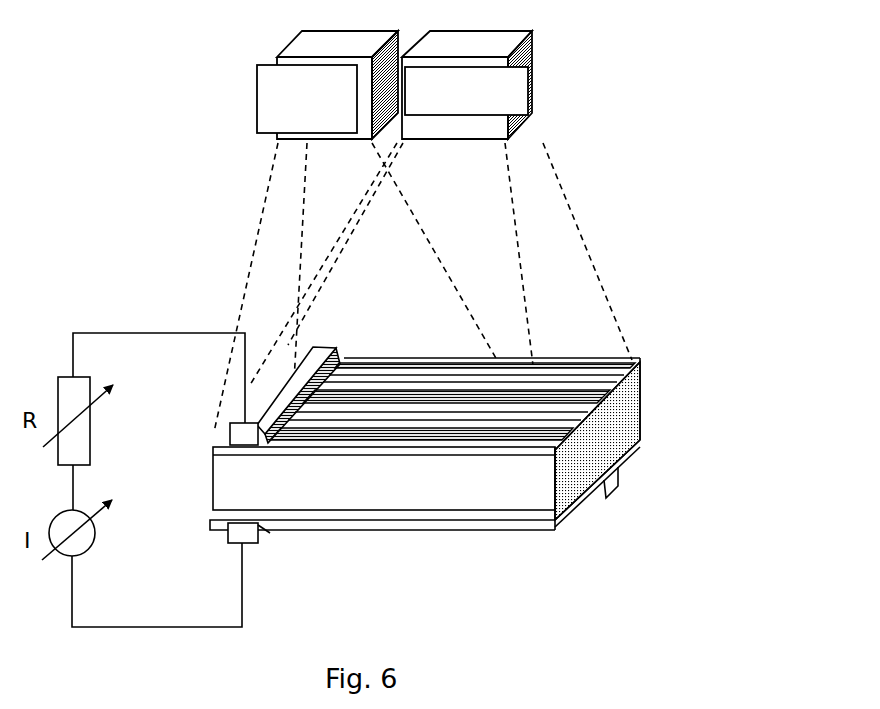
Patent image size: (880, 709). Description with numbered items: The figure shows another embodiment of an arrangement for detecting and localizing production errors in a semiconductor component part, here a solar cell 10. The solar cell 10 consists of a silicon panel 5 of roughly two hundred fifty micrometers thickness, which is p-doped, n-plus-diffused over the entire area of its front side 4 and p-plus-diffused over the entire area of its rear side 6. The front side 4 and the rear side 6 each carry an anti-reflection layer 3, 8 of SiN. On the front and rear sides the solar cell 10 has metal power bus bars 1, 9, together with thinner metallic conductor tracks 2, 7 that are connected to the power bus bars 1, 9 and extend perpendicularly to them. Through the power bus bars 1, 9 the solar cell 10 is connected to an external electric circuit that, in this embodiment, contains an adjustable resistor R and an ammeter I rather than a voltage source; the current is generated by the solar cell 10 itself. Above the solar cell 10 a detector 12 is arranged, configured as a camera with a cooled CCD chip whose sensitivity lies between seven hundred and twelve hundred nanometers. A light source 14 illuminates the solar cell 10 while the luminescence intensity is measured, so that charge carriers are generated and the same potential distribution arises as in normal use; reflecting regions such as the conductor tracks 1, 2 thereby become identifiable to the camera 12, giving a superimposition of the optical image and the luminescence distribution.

The power bus bar 1 is at (328, 343).
The conductor track 2 is at (365, 358).
The anti-reflection layer 3 is at (405, 360).
The front side 4 is at (650, 370).
The silicon panel 5 is at (642, 400).
The rear side 6 is at (642, 440).
The conductor track 7 is at (614, 474).
The anti-reflection layer 8 is at (335, 531).
The power bus bar 9 is at (235, 546).
The solar cell 10 is at (652, 322).
The detector 12 is at (497, 52).
The light source 14 is at (369, 50).